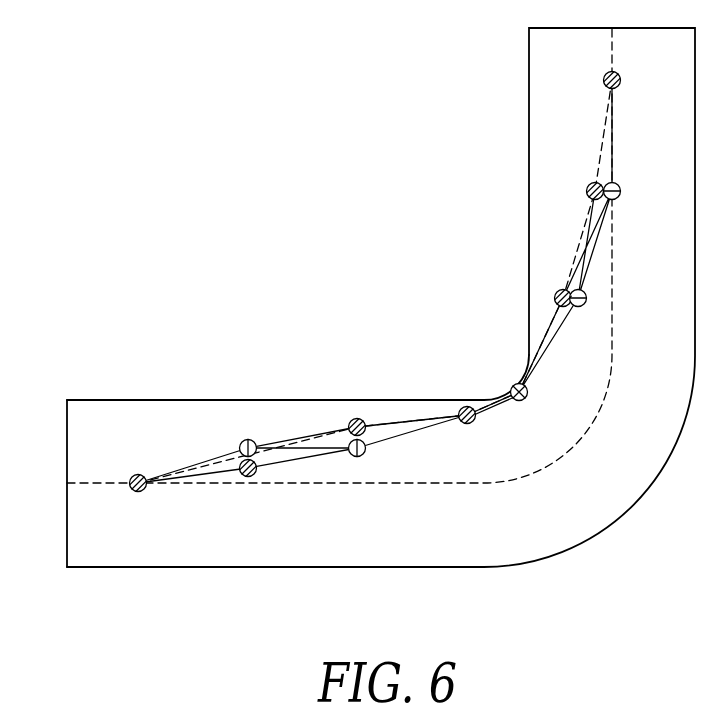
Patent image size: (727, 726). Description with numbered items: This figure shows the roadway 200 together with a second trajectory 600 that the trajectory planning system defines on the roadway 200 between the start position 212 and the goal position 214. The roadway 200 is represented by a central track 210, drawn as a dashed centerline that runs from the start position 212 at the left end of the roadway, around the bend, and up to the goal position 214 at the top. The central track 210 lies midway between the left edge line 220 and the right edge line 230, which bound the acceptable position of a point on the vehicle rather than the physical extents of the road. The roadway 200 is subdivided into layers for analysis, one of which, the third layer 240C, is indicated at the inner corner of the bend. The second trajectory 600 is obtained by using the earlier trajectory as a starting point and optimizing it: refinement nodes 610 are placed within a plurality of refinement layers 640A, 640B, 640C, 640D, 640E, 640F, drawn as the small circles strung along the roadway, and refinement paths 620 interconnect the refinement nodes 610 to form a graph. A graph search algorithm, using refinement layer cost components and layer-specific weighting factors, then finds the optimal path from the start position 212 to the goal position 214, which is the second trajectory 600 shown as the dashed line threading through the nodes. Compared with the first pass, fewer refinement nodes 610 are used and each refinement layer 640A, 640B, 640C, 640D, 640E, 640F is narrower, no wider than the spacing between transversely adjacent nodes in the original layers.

The roadway 200 is at (360, 324).
The central track 210 is at (67, 483).
The start position 212 is at (132, 478).
The goal position 214 is at (619, 73).
The left edge line 220 is at (184, 400).
The right edge line 230 is at (191, 567).
The third layer 240C is at (468, 405).
The second trajectory 600 is at (601, 134).
The refinement nodes 610 is at (256, 441).
The refinement paths 620 is at (322, 433).
The refinement layer 640A is at (248, 477).
The refinement layer 640B is at (357, 457).
The refinement layer 640C is at (468, 424).
The refinement layer 640D is at (528, 392).
The refinement layer 640E is at (557, 296).
The refinement layer 640F is at (620, 187).